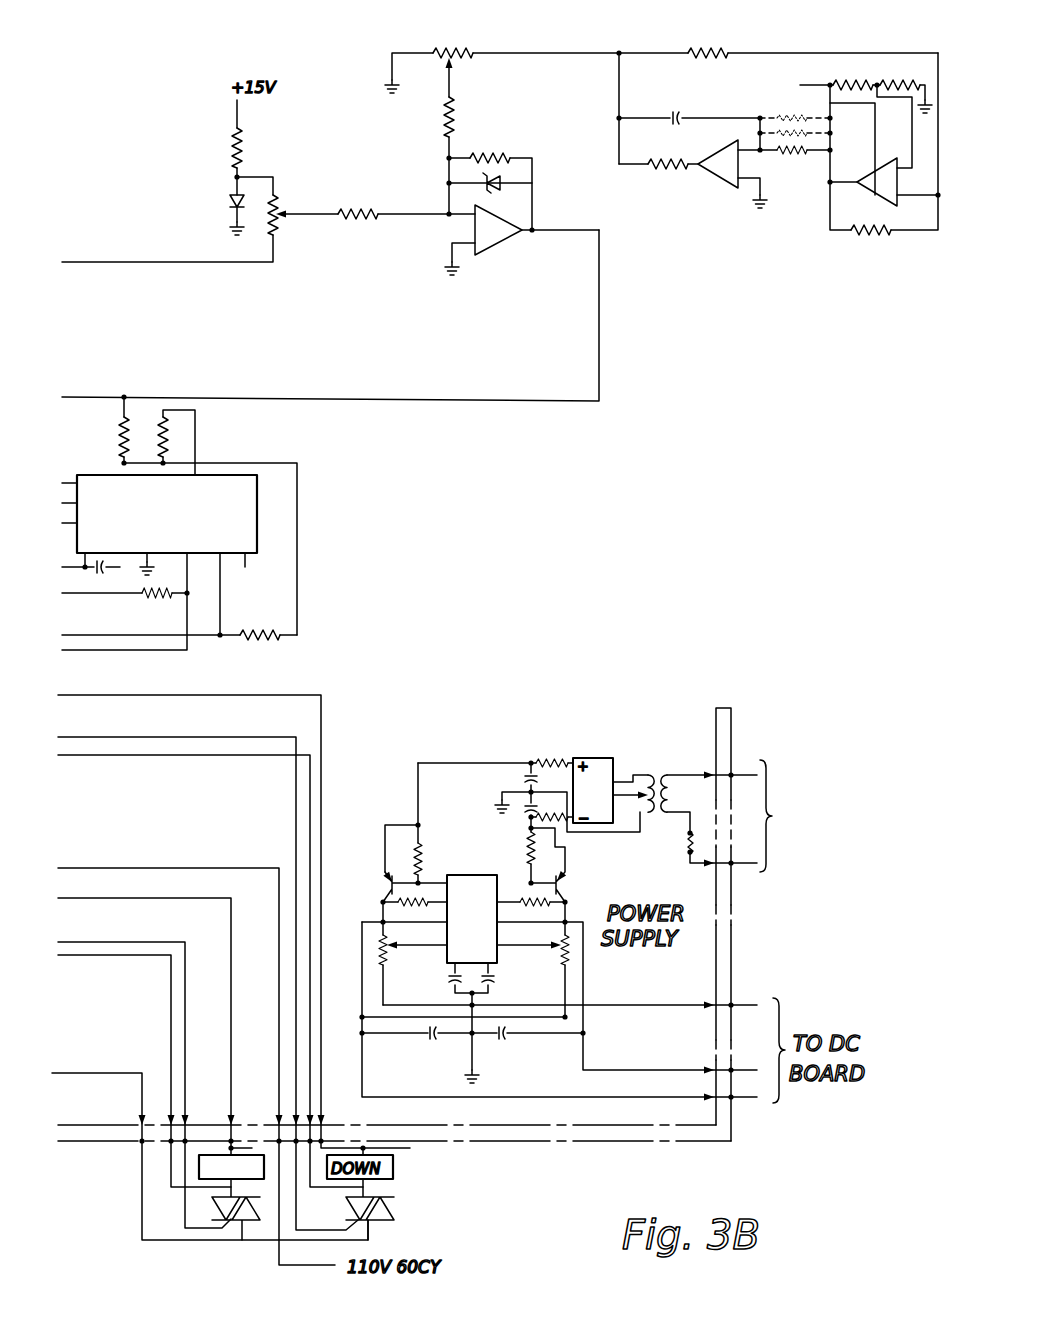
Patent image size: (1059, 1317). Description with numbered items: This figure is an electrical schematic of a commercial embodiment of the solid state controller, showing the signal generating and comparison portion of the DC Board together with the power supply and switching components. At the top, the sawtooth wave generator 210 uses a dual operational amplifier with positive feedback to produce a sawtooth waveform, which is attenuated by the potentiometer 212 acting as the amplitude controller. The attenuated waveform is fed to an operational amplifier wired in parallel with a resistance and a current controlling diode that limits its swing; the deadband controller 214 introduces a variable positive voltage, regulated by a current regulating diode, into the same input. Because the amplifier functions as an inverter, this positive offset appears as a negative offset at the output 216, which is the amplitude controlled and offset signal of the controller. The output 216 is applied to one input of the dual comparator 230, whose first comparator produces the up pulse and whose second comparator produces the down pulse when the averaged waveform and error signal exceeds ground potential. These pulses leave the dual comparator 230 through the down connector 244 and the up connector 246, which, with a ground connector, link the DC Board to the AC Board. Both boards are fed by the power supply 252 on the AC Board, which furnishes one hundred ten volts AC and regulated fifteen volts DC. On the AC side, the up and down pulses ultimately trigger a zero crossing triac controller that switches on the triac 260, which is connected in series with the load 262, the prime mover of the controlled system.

The sawtooth wave generator 210 is at (869, 258).
The potentiometer 212 is at (455, 47).
The deadband controller 214 is at (288, 271).
The output 216 is at (612, 354).
The dual comparator 230 is at (187, 528).
The down connector 244 is at (100, 651).
The up connector 246 is at (203, 641).
The power supply 252 is at (772, 891).
The triac 260 is at (208, 1210).
The load 262 is at (193, 1172).